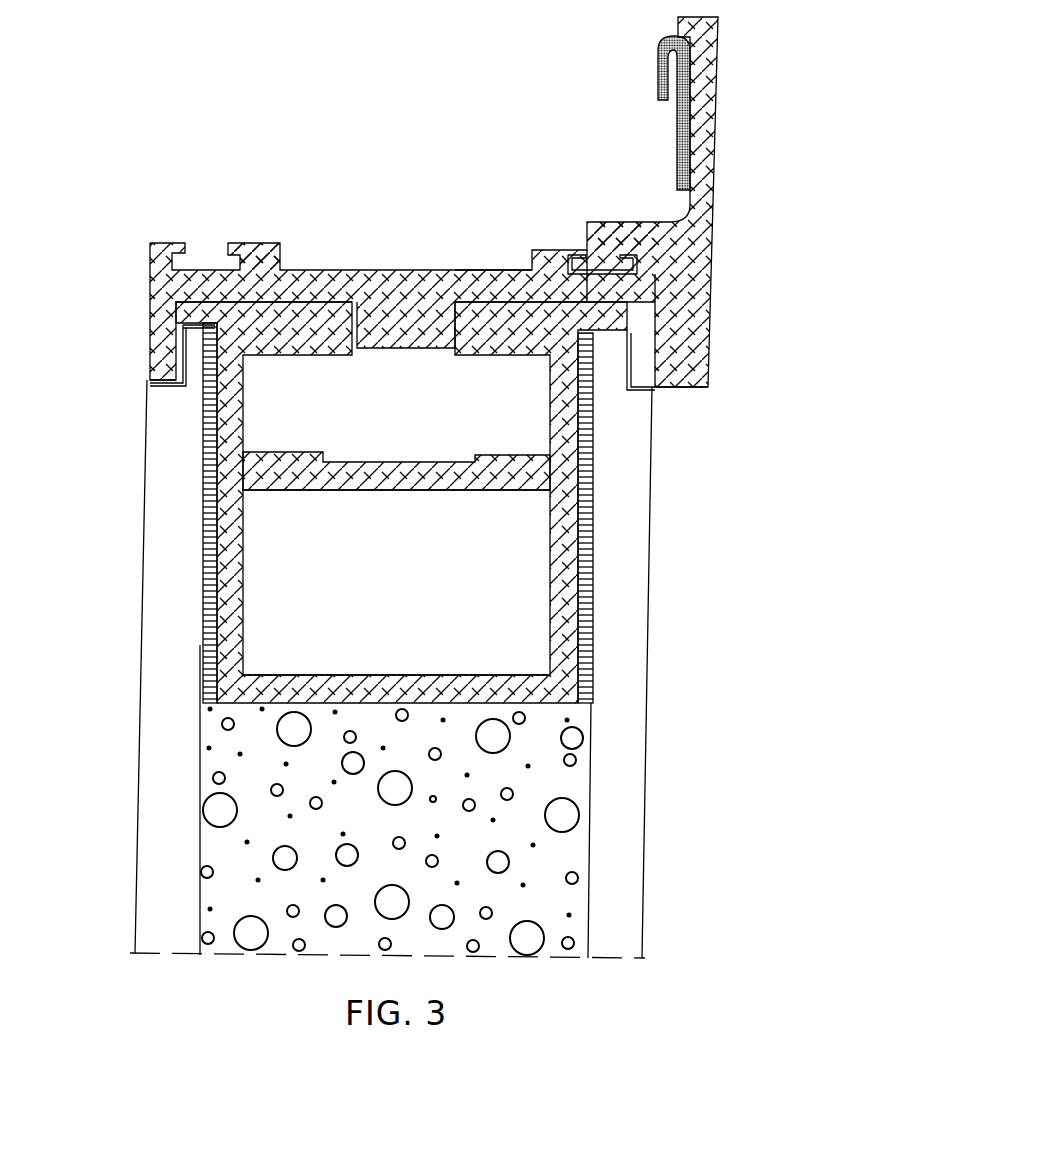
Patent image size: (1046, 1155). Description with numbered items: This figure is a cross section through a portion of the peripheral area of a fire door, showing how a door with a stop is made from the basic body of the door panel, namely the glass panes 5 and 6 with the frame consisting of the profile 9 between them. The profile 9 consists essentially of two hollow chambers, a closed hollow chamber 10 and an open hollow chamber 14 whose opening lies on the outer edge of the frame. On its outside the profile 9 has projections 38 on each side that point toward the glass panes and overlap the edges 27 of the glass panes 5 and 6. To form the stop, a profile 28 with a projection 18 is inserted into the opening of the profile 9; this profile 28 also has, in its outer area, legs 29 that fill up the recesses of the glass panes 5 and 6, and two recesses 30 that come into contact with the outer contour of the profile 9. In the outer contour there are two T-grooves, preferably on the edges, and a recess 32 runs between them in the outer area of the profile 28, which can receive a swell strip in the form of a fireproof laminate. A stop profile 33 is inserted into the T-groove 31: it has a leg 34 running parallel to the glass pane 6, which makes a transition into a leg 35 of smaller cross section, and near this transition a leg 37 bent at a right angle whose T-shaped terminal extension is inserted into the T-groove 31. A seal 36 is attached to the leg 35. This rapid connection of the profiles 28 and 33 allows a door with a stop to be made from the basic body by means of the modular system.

The glass pane 5 is at (160, 645).
The glass pane 6 is at (625, 805).
The profile 9 is at (590, 559).
The hollow chamber 10 is at (430, 590).
The hollow chamber 14 is at (275, 425).
The projection 18 is at (385, 330).
The edge 27 is at (158, 358).
The profile 28 is at (428, 297).
The leg 29 is at (158, 313).
The recess 30 is at (268, 292).
The T-groove 31 is at (215, 257).
The recess 32 is at (473, 272).
The stop profile 33 is at (712, 198).
The leg 34 is at (705, 345).
The leg 35 is at (718, 97).
The seal 36 is at (660, 78).
The leg 37 is at (633, 230).
The projection 38 is at (183, 303).